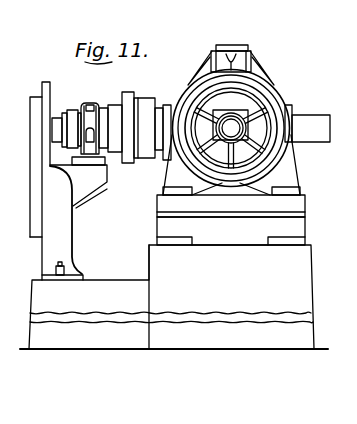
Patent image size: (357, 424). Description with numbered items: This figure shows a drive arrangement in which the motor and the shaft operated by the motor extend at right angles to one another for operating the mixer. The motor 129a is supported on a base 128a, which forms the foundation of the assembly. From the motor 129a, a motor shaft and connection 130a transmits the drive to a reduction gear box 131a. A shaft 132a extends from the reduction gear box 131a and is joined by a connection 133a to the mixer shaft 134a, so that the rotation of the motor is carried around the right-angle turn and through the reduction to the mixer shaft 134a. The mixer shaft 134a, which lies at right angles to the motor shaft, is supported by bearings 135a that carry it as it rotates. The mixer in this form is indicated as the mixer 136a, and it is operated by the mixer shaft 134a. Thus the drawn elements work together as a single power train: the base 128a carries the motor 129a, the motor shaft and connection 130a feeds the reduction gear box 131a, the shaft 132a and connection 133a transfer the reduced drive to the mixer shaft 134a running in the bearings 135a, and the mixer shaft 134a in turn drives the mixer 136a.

The base 128a is at (142, 268).
The motor 129a is at (327, 81).
The motor shaft and connection 130a is at (233, 126).
The reduction gear box 131a is at (288, 40).
The shaft 132a is at (182, 87).
The connection 133a is at (161, 76).
The mixer shaft 134a is at (85, 83).
The bearings 135a is at (119, 93).
The mixer 136a is at (61, 65).